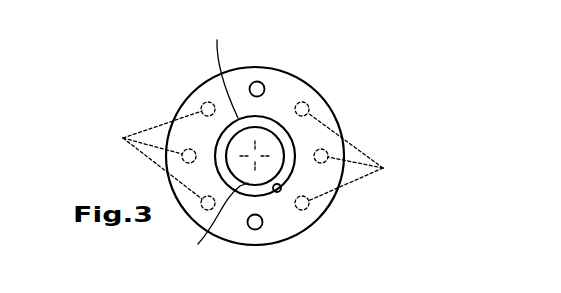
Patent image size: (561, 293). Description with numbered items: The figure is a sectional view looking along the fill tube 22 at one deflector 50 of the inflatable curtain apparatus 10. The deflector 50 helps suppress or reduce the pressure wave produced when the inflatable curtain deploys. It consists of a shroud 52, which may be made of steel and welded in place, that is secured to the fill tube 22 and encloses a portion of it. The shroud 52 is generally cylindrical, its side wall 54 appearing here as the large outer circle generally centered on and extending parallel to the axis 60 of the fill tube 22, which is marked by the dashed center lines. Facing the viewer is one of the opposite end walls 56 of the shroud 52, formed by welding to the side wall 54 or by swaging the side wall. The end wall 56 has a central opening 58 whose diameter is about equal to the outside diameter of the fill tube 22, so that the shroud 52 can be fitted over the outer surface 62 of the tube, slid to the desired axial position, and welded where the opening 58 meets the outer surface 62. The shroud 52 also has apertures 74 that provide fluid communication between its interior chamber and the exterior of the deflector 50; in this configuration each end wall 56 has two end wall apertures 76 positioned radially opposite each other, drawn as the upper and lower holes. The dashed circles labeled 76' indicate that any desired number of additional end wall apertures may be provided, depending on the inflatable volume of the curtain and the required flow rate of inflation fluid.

The apparatus 10 is at (113, 83).
The deflector 50 is at (162, 84).
The fill tube 22 is at (274, 127).
The shroud 52 is at (322, 107).
The side wall 54 is at (343, 125).
The end wall 56 is at (280, 88).
The central opening 58 is at (274, 192).
The axis 60 is at (255, 156).
The outer surface 62 is at (217, 40).
The apertures 74 is at (260, 82).
The end wall aperture 76 is at (286, 252).
The additional end wall apertures 76' is at (253, 156).